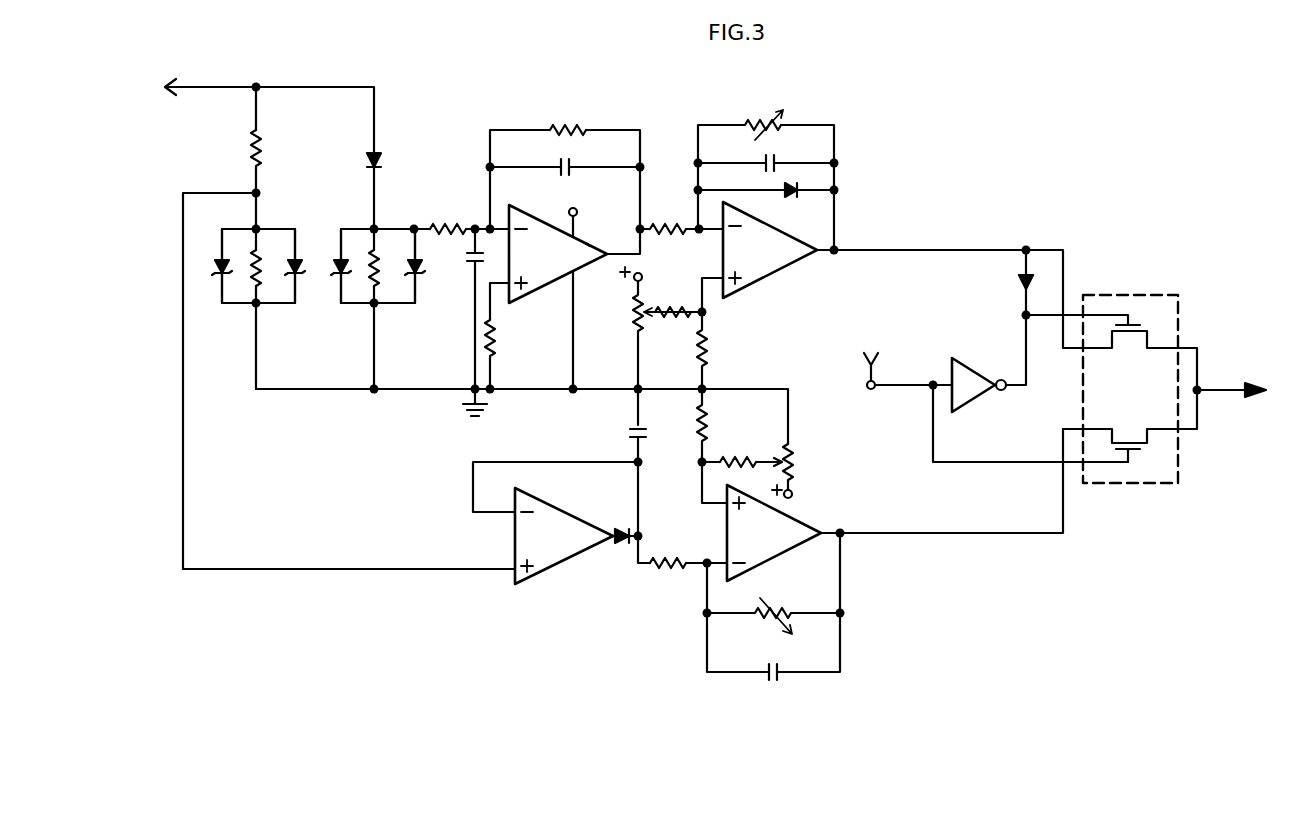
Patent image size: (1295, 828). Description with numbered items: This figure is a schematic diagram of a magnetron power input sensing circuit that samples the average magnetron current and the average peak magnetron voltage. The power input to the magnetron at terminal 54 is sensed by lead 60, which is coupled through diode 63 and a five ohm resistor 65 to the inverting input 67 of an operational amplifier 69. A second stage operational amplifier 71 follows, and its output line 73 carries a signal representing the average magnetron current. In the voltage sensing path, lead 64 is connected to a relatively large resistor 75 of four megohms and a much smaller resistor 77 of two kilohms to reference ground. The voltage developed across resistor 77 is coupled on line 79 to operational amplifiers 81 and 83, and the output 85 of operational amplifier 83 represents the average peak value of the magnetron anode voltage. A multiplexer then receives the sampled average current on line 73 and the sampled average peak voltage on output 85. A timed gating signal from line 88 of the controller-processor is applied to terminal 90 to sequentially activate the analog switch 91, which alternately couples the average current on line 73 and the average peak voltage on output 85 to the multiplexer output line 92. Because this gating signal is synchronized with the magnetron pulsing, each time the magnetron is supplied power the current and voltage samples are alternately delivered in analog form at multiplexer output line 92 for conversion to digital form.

The terminal 54 is at (168, 86).
The lead 60 is at (305, 86).
The lead 64 is at (254, 108).
The resistor 75 is at (262, 144).
The diode 63 is at (380, 156).
The resistor 77 is at (270, 264).
The resistor 65 is at (388, 266).
The inverting input 67 is at (502, 228).
The operational amplifier 69 is at (585, 243).
The second stage operational amplifier 71 is at (787, 240).
The output line 73 is at (922, 249).
The line 79 is at (185, 426).
The operational amplifier 81 is at (572, 520).
The operational amplifier 83 is at (800, 525).
The output 85 is at (940, 532).
The line 88 is at (876, 370).
The terminal 90 is at (866, 386).
The analog switch 91 is at (1136, 294).
The multiplexer output line 92 is at (1215, 396).